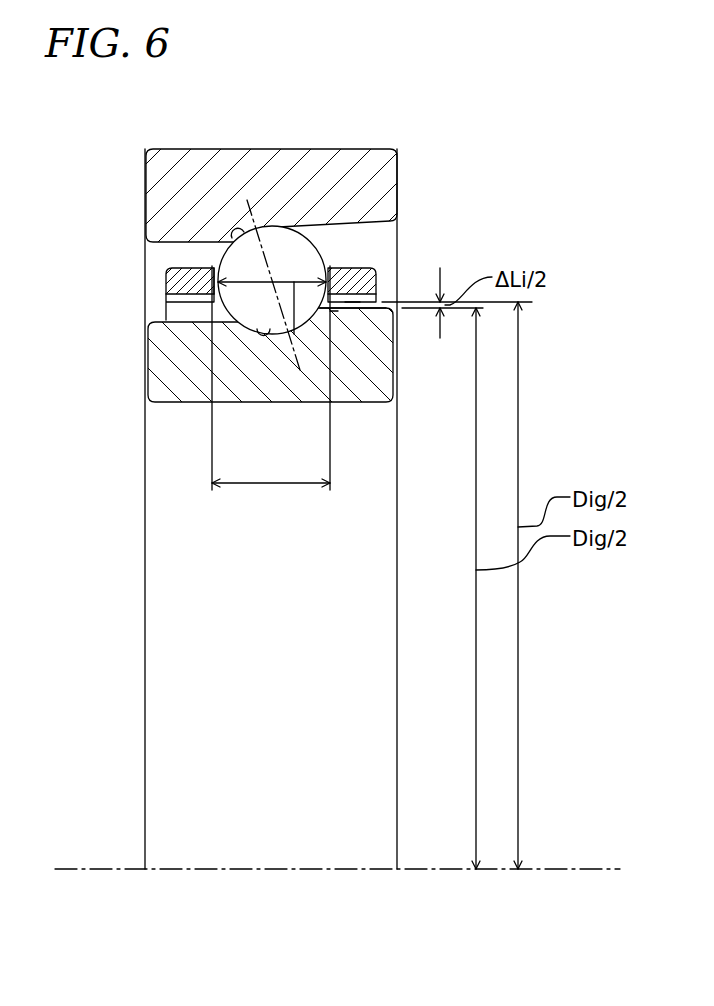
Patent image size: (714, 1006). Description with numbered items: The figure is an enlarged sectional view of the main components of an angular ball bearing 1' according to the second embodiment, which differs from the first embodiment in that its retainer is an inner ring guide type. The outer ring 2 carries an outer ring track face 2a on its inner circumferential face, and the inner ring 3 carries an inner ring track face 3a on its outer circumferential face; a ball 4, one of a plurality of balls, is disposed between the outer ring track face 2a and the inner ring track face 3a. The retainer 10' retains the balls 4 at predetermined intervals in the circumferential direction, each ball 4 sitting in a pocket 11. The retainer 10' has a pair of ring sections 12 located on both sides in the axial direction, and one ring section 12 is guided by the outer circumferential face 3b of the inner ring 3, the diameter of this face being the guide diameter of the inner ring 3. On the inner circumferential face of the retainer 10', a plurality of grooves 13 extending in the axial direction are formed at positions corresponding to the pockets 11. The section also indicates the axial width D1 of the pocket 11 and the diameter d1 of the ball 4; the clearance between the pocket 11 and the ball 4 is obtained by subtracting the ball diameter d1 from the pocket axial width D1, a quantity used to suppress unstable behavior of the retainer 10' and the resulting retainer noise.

The angular ball bearing 1' is at (271, 480).
The outer ring 2 is at (383, 189).
The outer ring track face 2a is at (238, 231).
The inner ring 3 is at (153, 367).
The inner ring track face 3a is at (260, 334).
The outer circumferential face of the inner ring 3b is at (376, 296).
The ball 4 is at (300, 257).
The retainer 10' is at (246, 290).
The pocket 11 is at (217, 269).
The ring section 12 is at (336, 312).
The groove 13 is at (352, 301).
The diameter of the ball d1 is at (296, 340).
The axial width of the pocket D1 is at (271, 388).